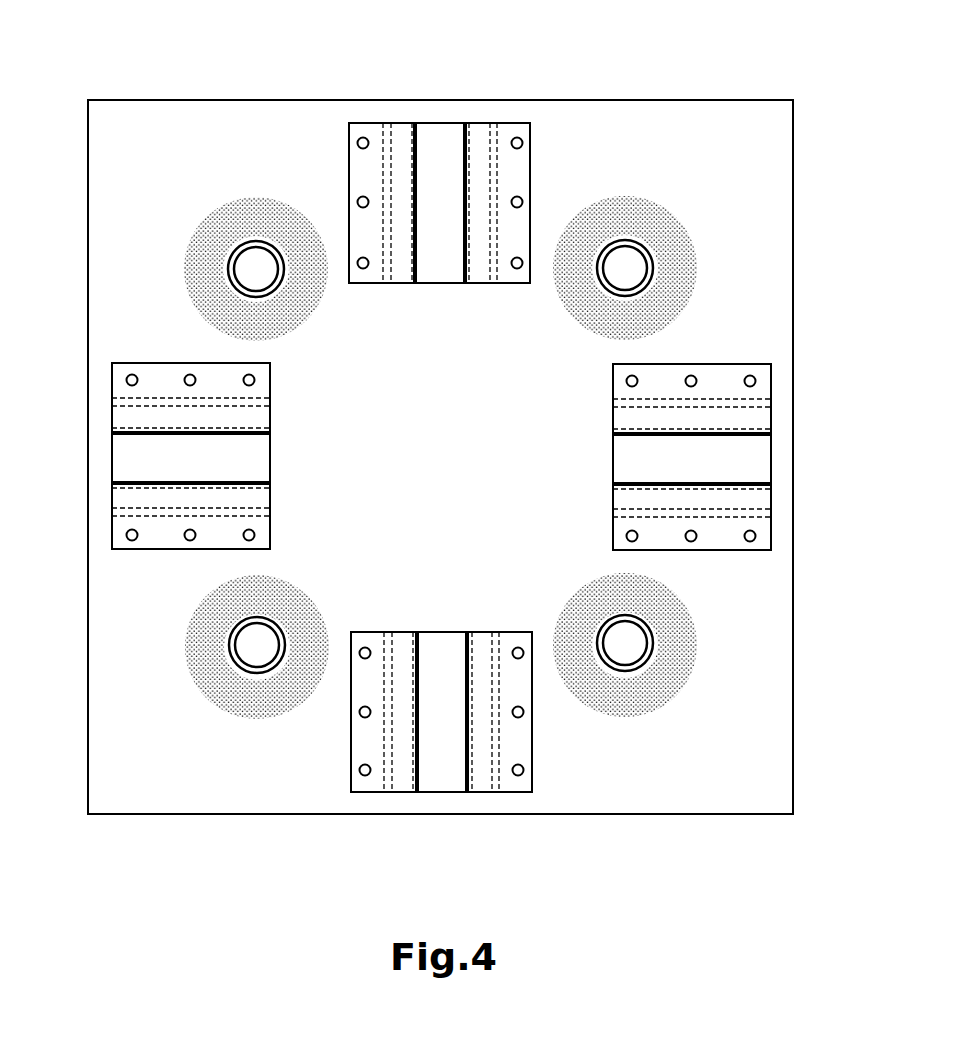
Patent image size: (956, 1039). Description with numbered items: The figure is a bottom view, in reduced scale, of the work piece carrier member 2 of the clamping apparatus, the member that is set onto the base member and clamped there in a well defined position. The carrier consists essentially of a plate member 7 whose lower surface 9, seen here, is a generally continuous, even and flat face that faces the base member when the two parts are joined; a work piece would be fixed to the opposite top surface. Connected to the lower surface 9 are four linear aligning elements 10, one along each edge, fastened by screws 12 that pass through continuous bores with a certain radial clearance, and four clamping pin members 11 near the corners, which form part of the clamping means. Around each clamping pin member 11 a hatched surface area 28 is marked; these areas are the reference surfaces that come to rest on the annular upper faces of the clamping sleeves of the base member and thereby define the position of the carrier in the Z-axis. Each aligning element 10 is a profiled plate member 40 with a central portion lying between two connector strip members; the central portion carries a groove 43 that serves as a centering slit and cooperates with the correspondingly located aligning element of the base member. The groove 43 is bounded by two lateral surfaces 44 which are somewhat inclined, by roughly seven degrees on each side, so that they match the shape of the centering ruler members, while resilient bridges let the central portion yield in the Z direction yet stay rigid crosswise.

The work piece carrier member 2 is at (72, 88).
The plate member 7 is at (128, 145).
The lower surface 9 is at (191, 205).
The linear aligning element 10 is at (456, 459).
The clamping pin member 11 is at (256, 262).
The screws 12 is at (358, 263).
The surface areas 28 is at (212, 272).
The profiled plate member 40 is at (770, 475).
The groove 43 is at (742, 447).
The lateral surfaces 44 is at (735, 430).